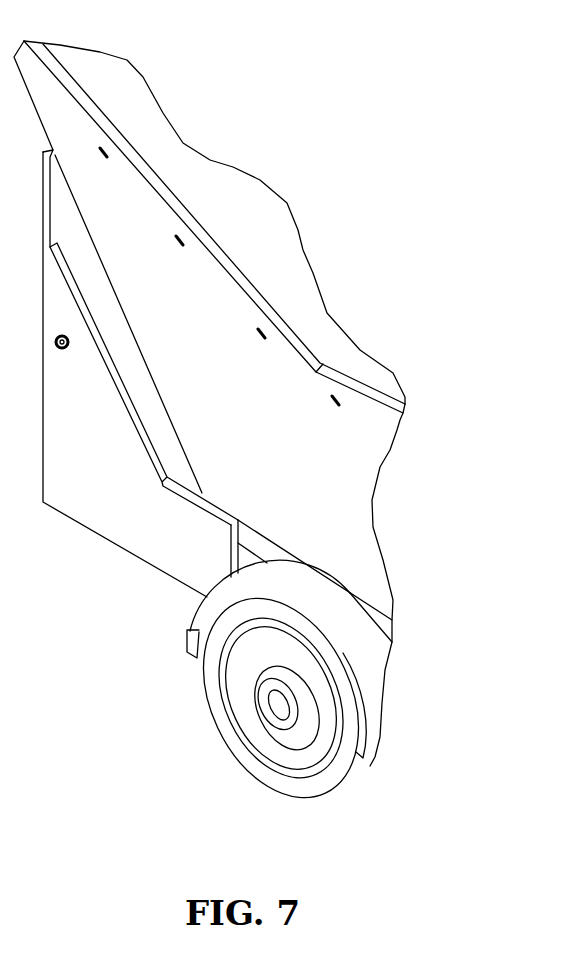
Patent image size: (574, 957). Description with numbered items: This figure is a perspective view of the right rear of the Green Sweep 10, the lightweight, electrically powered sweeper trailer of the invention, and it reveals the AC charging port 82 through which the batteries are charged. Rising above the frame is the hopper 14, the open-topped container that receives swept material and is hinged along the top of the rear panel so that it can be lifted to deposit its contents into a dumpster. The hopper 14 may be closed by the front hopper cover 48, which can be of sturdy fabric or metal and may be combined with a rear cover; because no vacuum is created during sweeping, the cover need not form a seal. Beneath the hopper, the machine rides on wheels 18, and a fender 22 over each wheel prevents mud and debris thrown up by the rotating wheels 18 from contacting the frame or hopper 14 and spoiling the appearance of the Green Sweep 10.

The Green Sweep 10 is at (378, 203).
The hopper 14 is at (358, 487).
The wheels 18 is at (262, 765).
The fenders 22 is at (187, 631).
The front hopper cover 48 is at (248, 195).
The AC charging port 82 is at (66, 335).